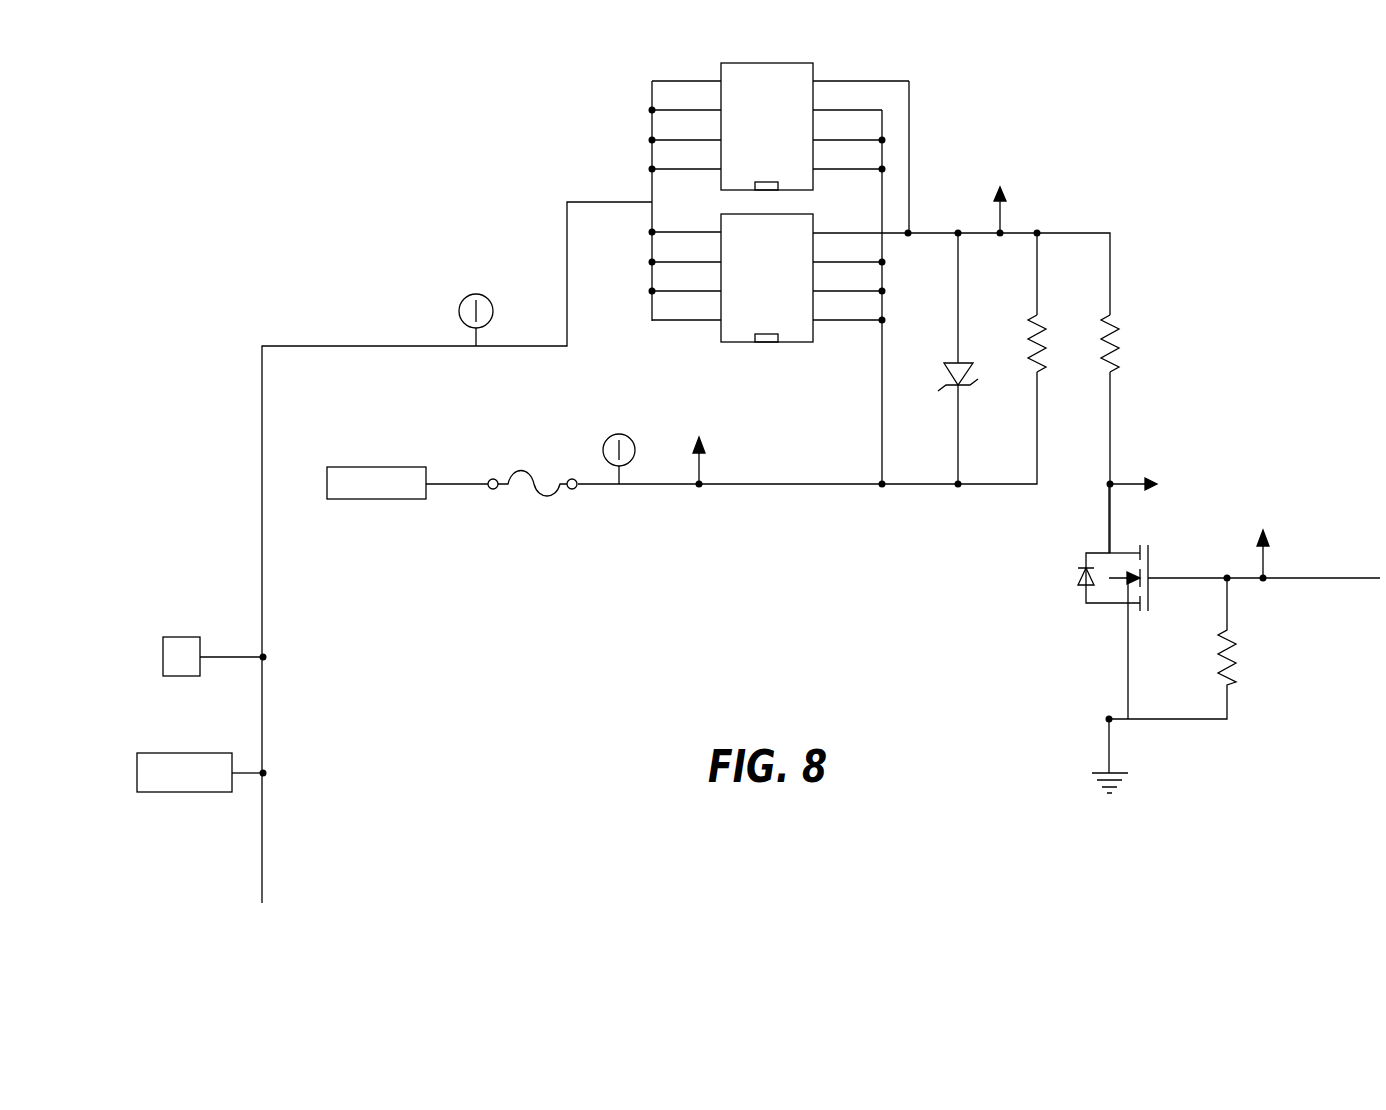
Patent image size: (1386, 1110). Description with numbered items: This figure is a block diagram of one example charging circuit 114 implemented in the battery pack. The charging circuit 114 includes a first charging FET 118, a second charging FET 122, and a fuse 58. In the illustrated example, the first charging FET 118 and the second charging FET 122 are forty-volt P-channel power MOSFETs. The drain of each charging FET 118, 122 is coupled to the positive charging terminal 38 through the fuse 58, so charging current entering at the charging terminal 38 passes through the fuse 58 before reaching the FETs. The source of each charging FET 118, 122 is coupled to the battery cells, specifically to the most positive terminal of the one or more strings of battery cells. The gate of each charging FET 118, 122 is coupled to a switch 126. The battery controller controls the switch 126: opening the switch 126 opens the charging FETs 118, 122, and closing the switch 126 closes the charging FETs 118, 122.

The charging circuit 114 is at (343, 188).
The first charging FET 118 is at (775, 62).
The second charging FET 122 is at (746, 343).
The positive charging terminal 38 is at (325, 484).
The fuse 58 is at (533, 496).
The switch 126 is at (1082, 590).